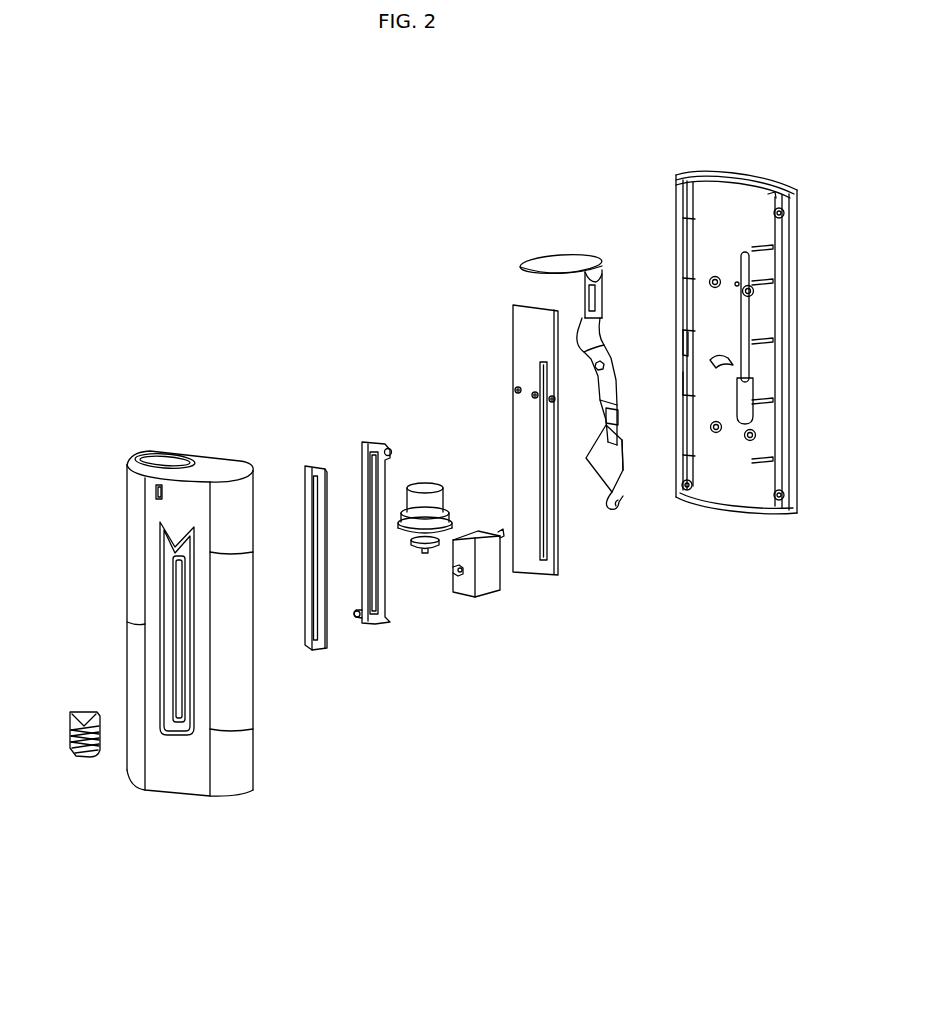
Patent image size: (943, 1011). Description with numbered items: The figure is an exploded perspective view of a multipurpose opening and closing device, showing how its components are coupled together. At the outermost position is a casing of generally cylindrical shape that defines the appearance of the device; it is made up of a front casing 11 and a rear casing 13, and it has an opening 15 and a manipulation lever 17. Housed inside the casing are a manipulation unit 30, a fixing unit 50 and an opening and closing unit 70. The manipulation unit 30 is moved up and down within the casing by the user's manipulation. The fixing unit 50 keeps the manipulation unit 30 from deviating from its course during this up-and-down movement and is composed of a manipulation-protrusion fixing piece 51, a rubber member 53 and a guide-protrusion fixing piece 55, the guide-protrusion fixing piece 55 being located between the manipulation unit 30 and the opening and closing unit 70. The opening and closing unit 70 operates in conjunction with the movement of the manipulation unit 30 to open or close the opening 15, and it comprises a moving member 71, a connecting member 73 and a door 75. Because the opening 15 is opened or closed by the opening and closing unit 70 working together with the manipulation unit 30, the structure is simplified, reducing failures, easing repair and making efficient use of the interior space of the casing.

The front casing 11 is at (235, 465).
The rear casing 13 is at (757, 175).
The opening 15 is at (159, 456).
The manipulation lever 17 is at (73, 752).
The manipulation unit 30 is at (488, 535).
The fixing unit 50 is at (431, 577).
The manipulation-protrusion fixing piece 51 is at (380, 628).
The rubber member 53 is at (315, 655).
The guide-protrusion fixing piece 55 is at (525, 578).
The opening and closing unit 70 is at (596, 287).
The moving member 71 is at (625, 430).
The connecting member 73 is at (603, 320).
The door 75 is at (563, 253).